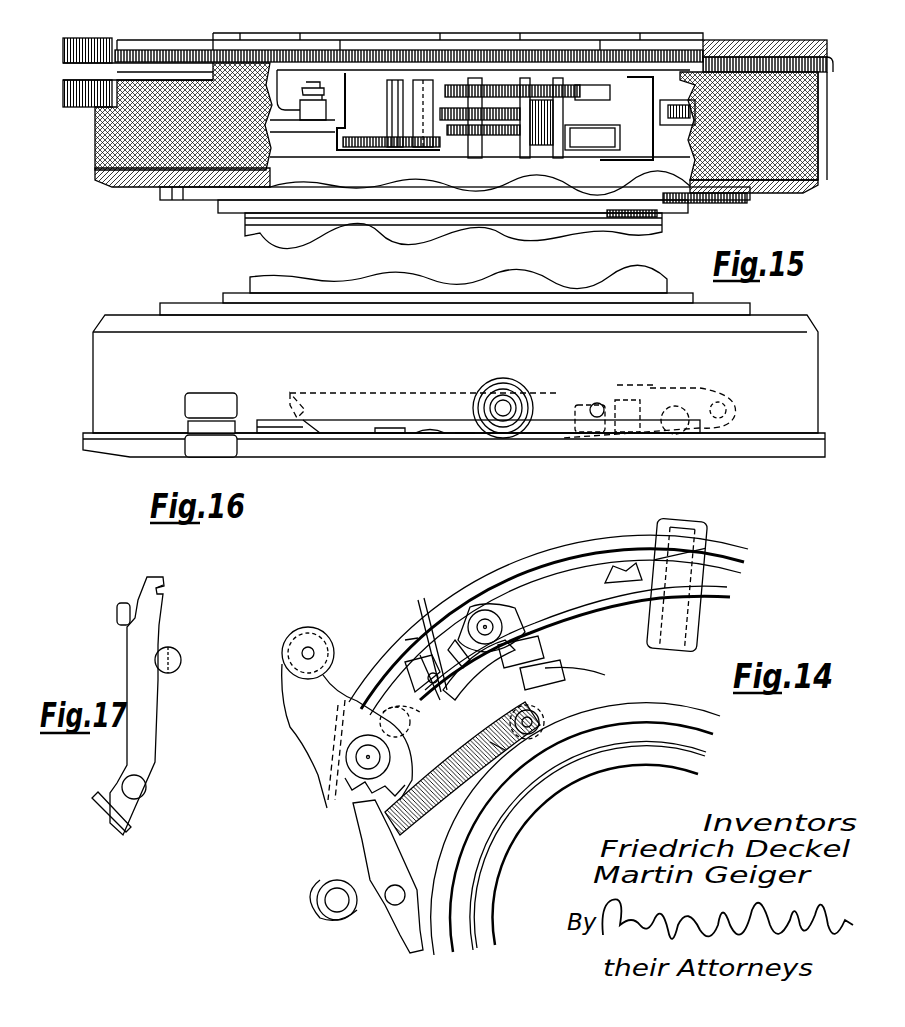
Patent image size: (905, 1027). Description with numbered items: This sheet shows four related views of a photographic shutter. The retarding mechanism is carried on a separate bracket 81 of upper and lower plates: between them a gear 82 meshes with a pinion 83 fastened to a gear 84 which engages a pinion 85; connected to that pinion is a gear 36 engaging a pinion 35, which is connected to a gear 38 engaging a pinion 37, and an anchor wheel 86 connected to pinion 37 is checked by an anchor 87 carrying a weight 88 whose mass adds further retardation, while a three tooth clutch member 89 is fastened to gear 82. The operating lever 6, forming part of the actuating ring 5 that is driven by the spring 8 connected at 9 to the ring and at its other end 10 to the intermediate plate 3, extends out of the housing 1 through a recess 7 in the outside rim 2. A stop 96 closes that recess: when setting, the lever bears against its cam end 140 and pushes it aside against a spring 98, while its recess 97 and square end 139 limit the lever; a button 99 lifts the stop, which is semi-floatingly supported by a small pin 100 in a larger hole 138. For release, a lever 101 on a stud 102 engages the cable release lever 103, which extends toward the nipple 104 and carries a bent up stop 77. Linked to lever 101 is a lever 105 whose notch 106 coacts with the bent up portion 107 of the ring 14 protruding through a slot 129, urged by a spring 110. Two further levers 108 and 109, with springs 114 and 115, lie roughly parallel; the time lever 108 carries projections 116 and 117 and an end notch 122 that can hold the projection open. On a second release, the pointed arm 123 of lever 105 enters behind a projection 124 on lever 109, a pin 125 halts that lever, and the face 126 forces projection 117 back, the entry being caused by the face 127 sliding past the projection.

In FIG. 16, the housing 1 is at (111, 323).
In FIG. 16, the outside rim 2 is at (98, 394).
In FIG. 14, the intermediate plate 3 is at (527, 577).
In FIG. 14, the actuating ring 5 is at (430, 912).
In FIG. 16, the operating lever 6 is at (210, 425).
In FIG. 15, the recess 7 is at (133, 182).
In FIG. 16, the recess 7 is at (362, 422).
In FIG. 15, the spring 8 is at (298, 92).
In FIG. 14, the spring 8 is at (427, 850).
In FIG. 14, the connection point 9 is at (588, 770).
In FIG. 15, the spring end 10 is at (309, 112).
In FIG. 14, the spring end 10 is at (338, 905).
In FIG. 14, the ring 14 is at (590, 608).
In FIG. 15, the pinion 35 is at (453, 110).
In FIG. 15, the gear 36 is at (563, 100).
In FIG. 15, the pinion 37 is at (560, 108).
In FIG. 15, the gear 38 is at (475, 98).
In FIG. 14, the bent up stop 77 is at (610, 568).
In FIG. 15, the bracket 81 is at (352, 93).
In FIG. 15, the gear 82 is at (373, 147).
In FIG. 15, the pinion 83 is at (512, 125).
In FIG. 15, the gear 84 is at (507, 133).
In FIG. 15, the pinion 85 is at (550, 143).
In FIG. 15, the anchor wheel 86 is at (517, 84).
In FIG. 15, the anchor 87 is at (620, 83).
In FIG. 15, the weight 88 is at (603, 140).
In FIG. 15, the three tooth clutch member 89 is at (435, 88).
In FIG. 16, the stop 96 is at (387, 433).
In FIG. 16, the recess 97 is at (427, 435).
In FIG. 16, the spring 98 is at (705, 390).
In FIG. 16, the button 99 is at (490, 392).
In FIG. 16, the pin 100 is at (598, 405).
In FIG. 15, the lever 101 is at (80, 74).
In FIG. 14, the lever 101 is at (313, 725).
In FIG. 14, the stud 102 is at (358, 764).
In FIG. 14, the cable release lever 103 is at (590, 608).
In FIG. 14, the nipple 104 is at (703, 532).
In FIG. 14, the lever 105 is at (530, 800).
In FIG. 14, the notch 106 is at (515, 675).
In FIG. 14, the bent up portion 107 is at (545, 715).
In FIG. 17, the lever 108 is at (156, 738).
In FIG. 14, the lever 108 is at (340, 823).
In FIG. 14, the lever 109 is at (425, 660).
In FIG. 14, the spring 110 is at (430, 842).
In FIG. 17, the spring 114 is at (100, 803).
In FIG. 14, the spring 114 is at (328, 790).
In FIG. 14, the spring 115 is at (455, 648).
In FIG. 17, the projection 116 is at (182, 660).
In FIG. 14, the projection 116 is at (497, 748).
In FIG. 17, the projection 117 is at (118, 610).
In FIG. 14, the projection 117 is at (463, 650).
In FIG. 17, the notch 122 is at (165, 585).
In FIG. 14, the notch 122 is at (500, 624).
In FIG. 14, the pointed arm 123 is at (430, 672).
In FIG. 14, the projection 124 is at (422, 640).
In FIG. 14, the pin 125 is at (412, 640).
In FIG. 14, the face 126 is at (393, 697).
In FIG. 14, the face 127 is at (522, 668).
In FIG. 14, the slot 129 is at (560, 672).
In FIG. 16, the hole 138 is at (580, 405).
In FIG. 16, the square end 139 is at (462, 437).
In FIG. 16, the cam end 140 is at (298, 415).